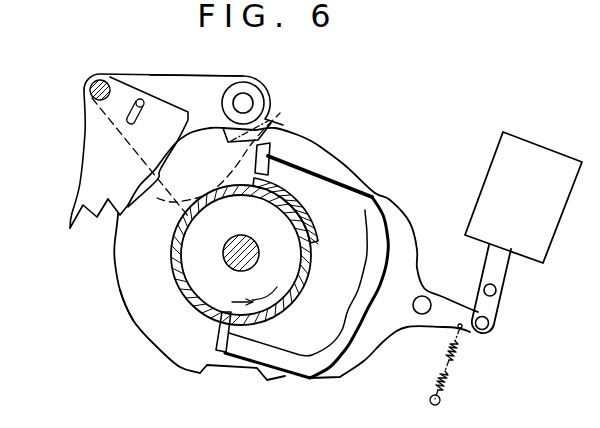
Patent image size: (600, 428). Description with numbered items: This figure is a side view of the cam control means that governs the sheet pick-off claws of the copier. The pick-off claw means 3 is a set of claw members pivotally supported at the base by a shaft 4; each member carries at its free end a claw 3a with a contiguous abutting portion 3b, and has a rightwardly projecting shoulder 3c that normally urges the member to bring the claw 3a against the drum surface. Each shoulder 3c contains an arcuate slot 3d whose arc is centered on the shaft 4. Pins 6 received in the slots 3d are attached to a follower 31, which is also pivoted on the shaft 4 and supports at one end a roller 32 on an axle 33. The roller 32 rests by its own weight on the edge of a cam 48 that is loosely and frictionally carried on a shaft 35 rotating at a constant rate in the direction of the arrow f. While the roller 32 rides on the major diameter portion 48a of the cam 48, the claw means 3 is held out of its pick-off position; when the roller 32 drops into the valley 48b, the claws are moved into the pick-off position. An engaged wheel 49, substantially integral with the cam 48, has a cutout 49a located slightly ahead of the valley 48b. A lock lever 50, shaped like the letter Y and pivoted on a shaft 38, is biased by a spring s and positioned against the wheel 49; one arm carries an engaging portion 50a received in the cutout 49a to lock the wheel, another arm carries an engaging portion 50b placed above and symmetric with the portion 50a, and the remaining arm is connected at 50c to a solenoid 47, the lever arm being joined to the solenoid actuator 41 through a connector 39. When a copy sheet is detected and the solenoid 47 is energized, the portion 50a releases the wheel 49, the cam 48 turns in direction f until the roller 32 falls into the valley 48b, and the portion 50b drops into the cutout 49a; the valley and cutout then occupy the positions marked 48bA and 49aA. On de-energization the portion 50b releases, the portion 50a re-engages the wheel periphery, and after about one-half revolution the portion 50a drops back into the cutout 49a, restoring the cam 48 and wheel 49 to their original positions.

The pick-off claw means 3 is at (92, 139).
The claw 3a is at (70, 213).
The abutting portion 3b is at (98, 222).
The shoulder 3c is at (182, 110).
The arcuate slot 3d is at (133, 100).
The shaft 4 is at (97, 78).
The pin 6 is at (146, 100).
The follower 31 is at (223, 80).
The roller 32 is at (250, 82).
The axle 33 is at (246, 101).
The shaft 35 is at (222, 243).
The shaft 38 is at (426, 299).
The connector 39 is at (496, 305).
The actuator 41 is at (505, 276).
The solenoid 47 is at (548, 243).
The cam 48 is at (123, 273).
The major diameter portion 48a is at (140, 333).
The valley 48b is at (250, 382).
The valley position 48bA is at (266, 123).
The engaged wheel 49 is at (311, 251).
The cutout 49a is at (213, 313).
The cutout position 49aA is at (300, 202).
The lock lever 50 is at (382, 337).
The engaging portion 50a is at (262, 329).
The engaging portion 50b is at (272, 154).
The connection point 50c is at (483, 331).
The arrow f is at (276, 288).
The spring s is at (448, 373).